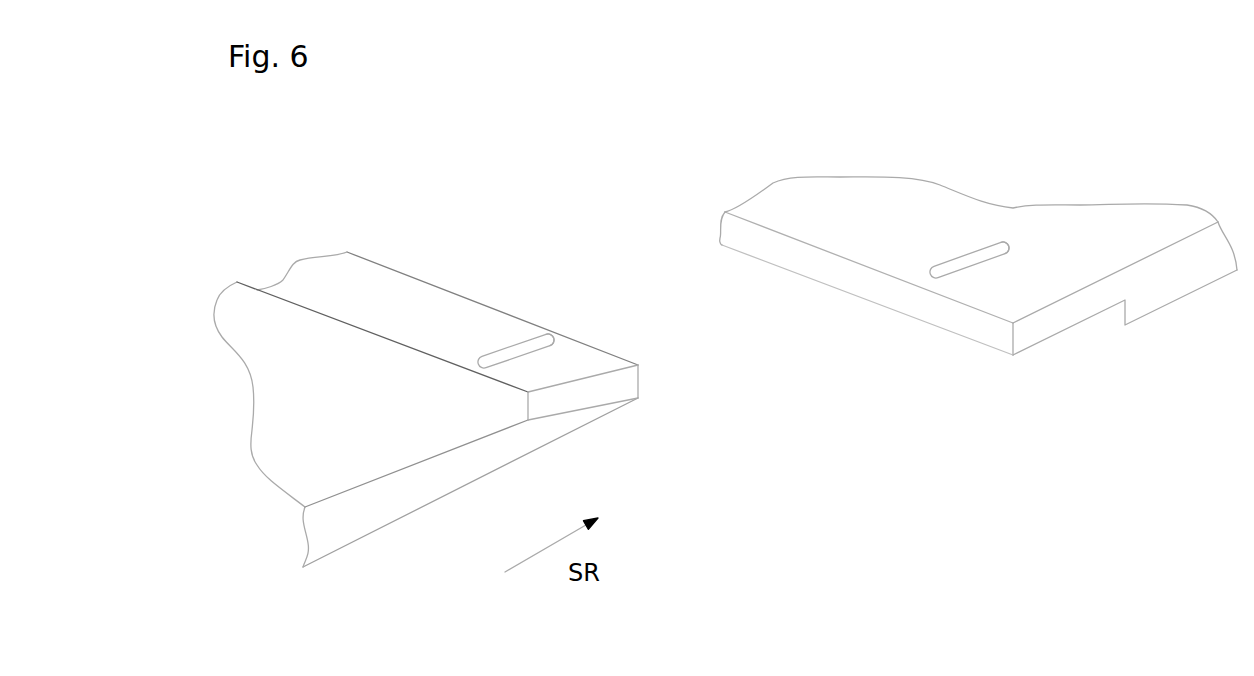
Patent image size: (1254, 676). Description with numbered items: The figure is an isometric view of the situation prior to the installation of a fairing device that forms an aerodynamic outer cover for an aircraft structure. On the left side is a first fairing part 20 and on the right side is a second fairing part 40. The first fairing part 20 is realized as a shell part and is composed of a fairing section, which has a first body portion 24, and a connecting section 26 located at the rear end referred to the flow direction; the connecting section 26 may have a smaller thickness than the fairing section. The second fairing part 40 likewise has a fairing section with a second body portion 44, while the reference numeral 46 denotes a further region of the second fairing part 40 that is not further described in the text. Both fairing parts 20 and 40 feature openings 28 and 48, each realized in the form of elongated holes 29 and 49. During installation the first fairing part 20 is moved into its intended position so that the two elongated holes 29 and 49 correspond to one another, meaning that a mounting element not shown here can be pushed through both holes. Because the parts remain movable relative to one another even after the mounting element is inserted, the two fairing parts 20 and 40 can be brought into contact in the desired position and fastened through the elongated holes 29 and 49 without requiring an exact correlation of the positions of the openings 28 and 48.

The first fairing part 20 is at (303, 355).
The first body portion 24 is at (285, 442).
The connecting section 26 is at (595, 408).
The opening 28 is at (511, 345).
The elongated hole 29 is at (542, 344).
The second fairing part 40 is at (1133, 217).
The second body portion 44 is at (843, 213).
The side face of second plate 46 is at (1052, 315).
The opening 48 is at (960, 248).
The elongated hole 49 is at (1005, 247).